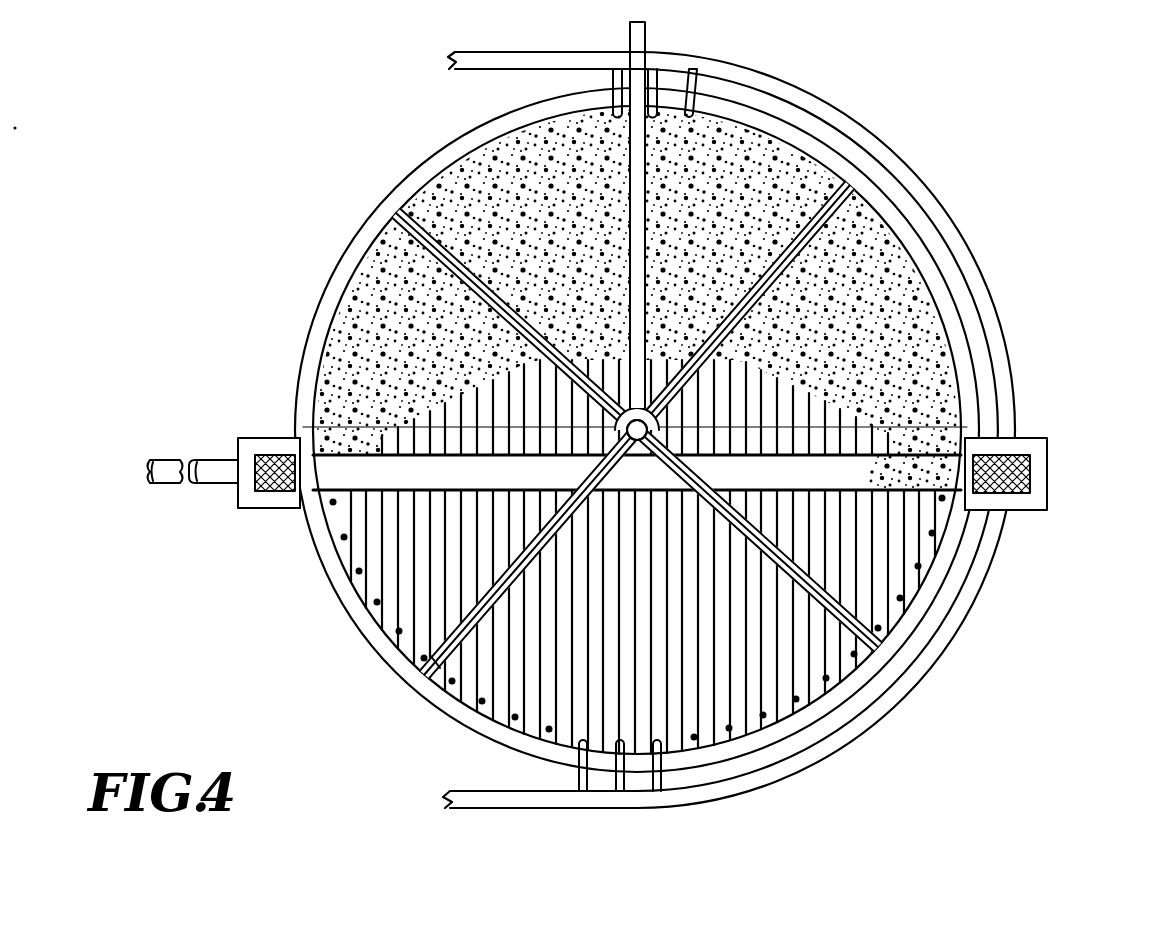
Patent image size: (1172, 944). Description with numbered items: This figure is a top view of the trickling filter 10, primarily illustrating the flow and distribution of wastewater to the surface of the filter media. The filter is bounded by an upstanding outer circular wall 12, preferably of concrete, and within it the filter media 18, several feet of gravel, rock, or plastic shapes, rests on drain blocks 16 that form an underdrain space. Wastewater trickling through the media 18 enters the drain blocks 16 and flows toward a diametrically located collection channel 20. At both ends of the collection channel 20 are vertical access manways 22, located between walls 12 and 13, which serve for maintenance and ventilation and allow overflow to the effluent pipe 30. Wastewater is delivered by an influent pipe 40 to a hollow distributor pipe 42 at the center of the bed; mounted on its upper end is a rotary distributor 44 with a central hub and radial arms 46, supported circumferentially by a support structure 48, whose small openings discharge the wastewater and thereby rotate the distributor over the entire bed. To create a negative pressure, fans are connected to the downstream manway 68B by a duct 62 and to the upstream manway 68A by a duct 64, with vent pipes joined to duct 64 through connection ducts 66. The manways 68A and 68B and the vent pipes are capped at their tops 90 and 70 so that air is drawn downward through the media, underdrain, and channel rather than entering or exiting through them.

The trickling filter 10 is at (521, 853).
The outer circular wall 12 is at (345, 612).
The wall 13 is at (238, 445).
The drain blocks 16 is at (810, 490).
The filter media 18 is at (856, 322).
The collection channels 20 is at (875, 525).
The access manways 22 is at (1083, 412).
The effluent pipe 30 is at (157, 458).
The influent pipe 40 is at (646, 38).
The distributor pipe 42 is at (682, 405).
The rotary distributor 44 is at (620, 392).
The radial arms 46 is at (440, 665).
The support structure 48 is at (440, 660).
The duct 62 is at (195, 484).
The duct 64 is at (845, 112).
The connection ducts 66 is at (660, 775).
The upstream manway 68A is at (1015, 485).
The downstream manway 68B is at (282, 465).
The caps 70 is at (768, 715).
The caps 90 is at (298, 508).